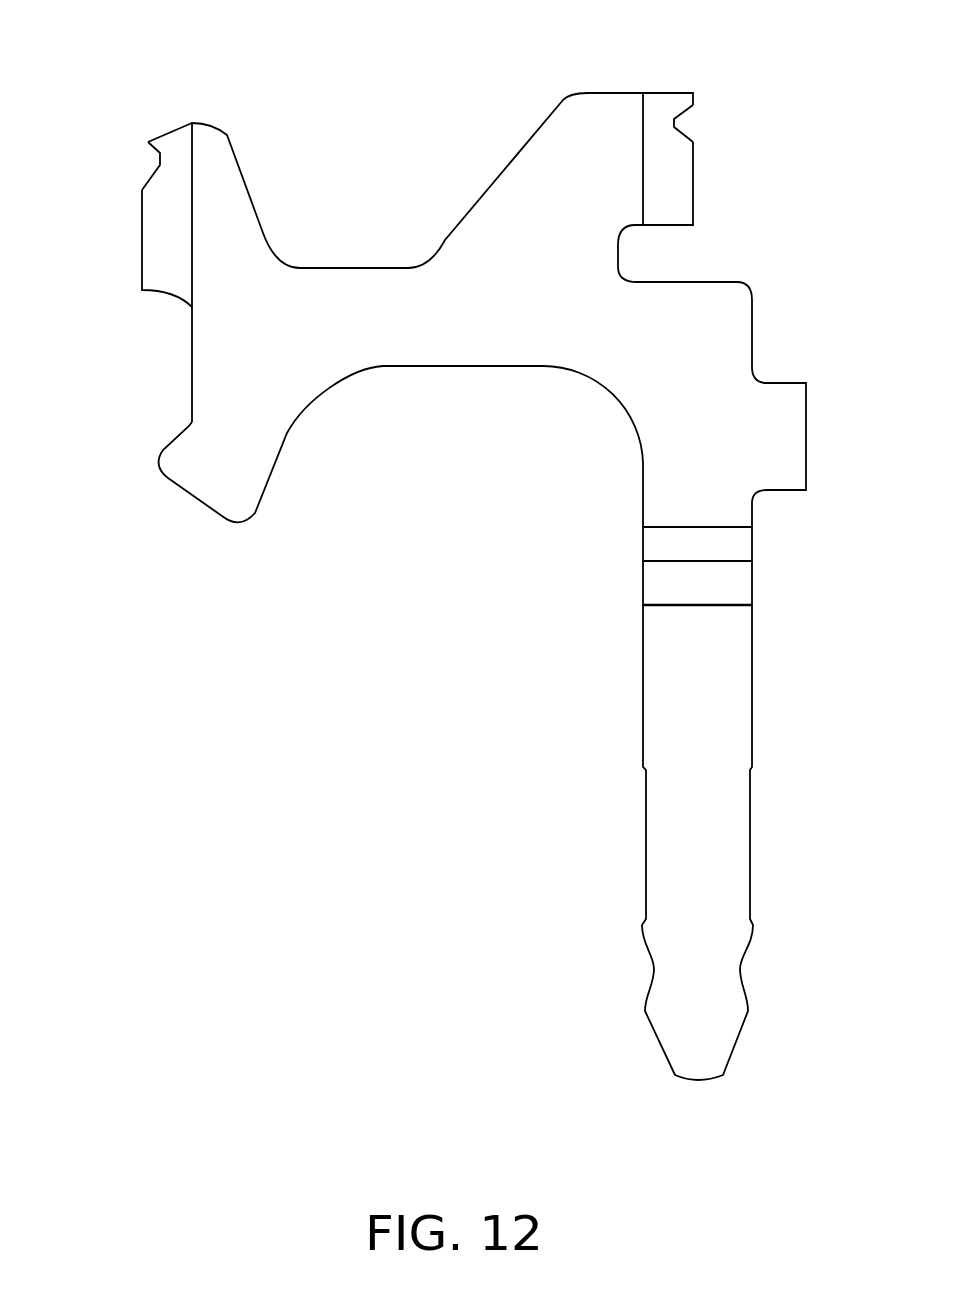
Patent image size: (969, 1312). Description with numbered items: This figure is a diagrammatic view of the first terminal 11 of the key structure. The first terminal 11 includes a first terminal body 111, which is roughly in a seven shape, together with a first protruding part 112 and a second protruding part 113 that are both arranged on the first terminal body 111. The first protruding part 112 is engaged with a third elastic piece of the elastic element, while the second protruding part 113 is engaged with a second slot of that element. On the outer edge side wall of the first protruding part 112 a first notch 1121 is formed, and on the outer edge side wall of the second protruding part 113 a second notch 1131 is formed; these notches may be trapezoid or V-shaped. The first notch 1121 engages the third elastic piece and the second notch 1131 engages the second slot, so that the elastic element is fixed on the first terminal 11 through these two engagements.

The first terminal 11 is at (441, 28).
The first terminal body 111 is at (728, 483).
The first protruding part 112 is at (160, 243).
The first notch 1121 is at (143, 160).
The second protruding part 113 is at (677, 183).
The second notch 1131 is at (700, 115).